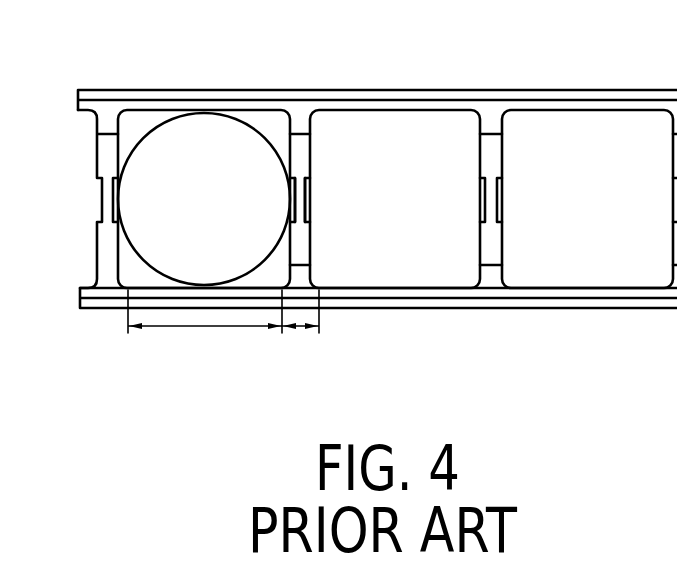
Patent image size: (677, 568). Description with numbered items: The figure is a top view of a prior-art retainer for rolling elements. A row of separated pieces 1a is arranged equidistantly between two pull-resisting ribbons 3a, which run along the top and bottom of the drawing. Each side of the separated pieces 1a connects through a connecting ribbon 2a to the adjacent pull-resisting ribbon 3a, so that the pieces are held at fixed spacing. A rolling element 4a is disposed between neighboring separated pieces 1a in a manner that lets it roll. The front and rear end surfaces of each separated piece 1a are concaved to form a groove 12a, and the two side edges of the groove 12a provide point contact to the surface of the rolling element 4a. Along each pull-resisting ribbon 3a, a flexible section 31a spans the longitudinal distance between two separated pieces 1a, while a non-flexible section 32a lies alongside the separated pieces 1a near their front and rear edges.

The separated piece 1a is at (108, 162).
The connecting ribbon 2a is at (109, 122).
The pull-resisting ribbon 3a is at (188, 100).
The rolling element 4a is at (230, 146).
The groove 12a is at (305, 197).
The flexible section 31a is at (203, 328).
The non-flexible section 32a is at (303, 328).